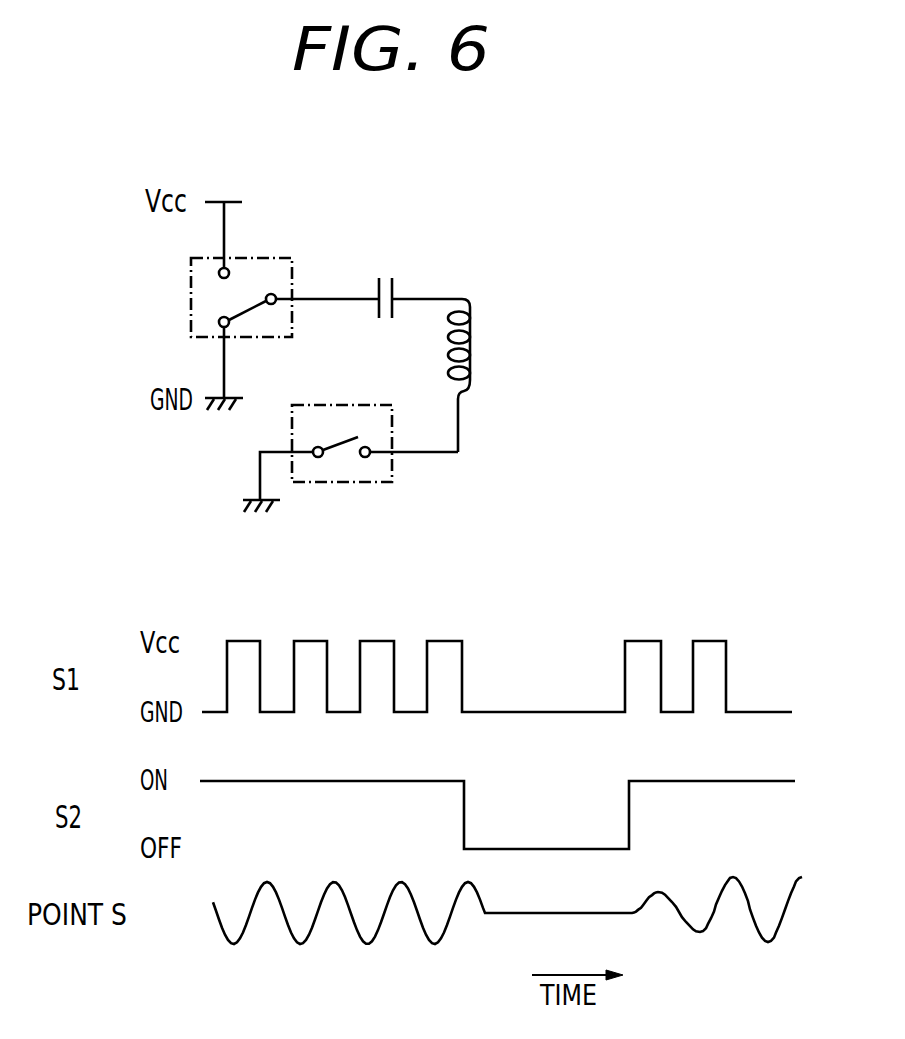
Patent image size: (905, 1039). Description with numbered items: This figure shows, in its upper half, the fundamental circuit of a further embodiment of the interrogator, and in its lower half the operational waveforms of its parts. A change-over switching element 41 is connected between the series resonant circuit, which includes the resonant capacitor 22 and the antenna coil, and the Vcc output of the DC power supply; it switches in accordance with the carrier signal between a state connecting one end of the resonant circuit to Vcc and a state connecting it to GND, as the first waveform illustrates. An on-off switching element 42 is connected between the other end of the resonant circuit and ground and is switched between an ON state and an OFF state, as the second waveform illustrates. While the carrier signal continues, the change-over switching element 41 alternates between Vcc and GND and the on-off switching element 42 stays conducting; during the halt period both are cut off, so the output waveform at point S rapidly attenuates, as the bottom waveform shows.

The change-over switching element 41 is at (277, 267).
The resonant capacitor 22 is at (398, 287).
The point S is at (412, 291).
The on-off switching element 42 is at (347, 468).